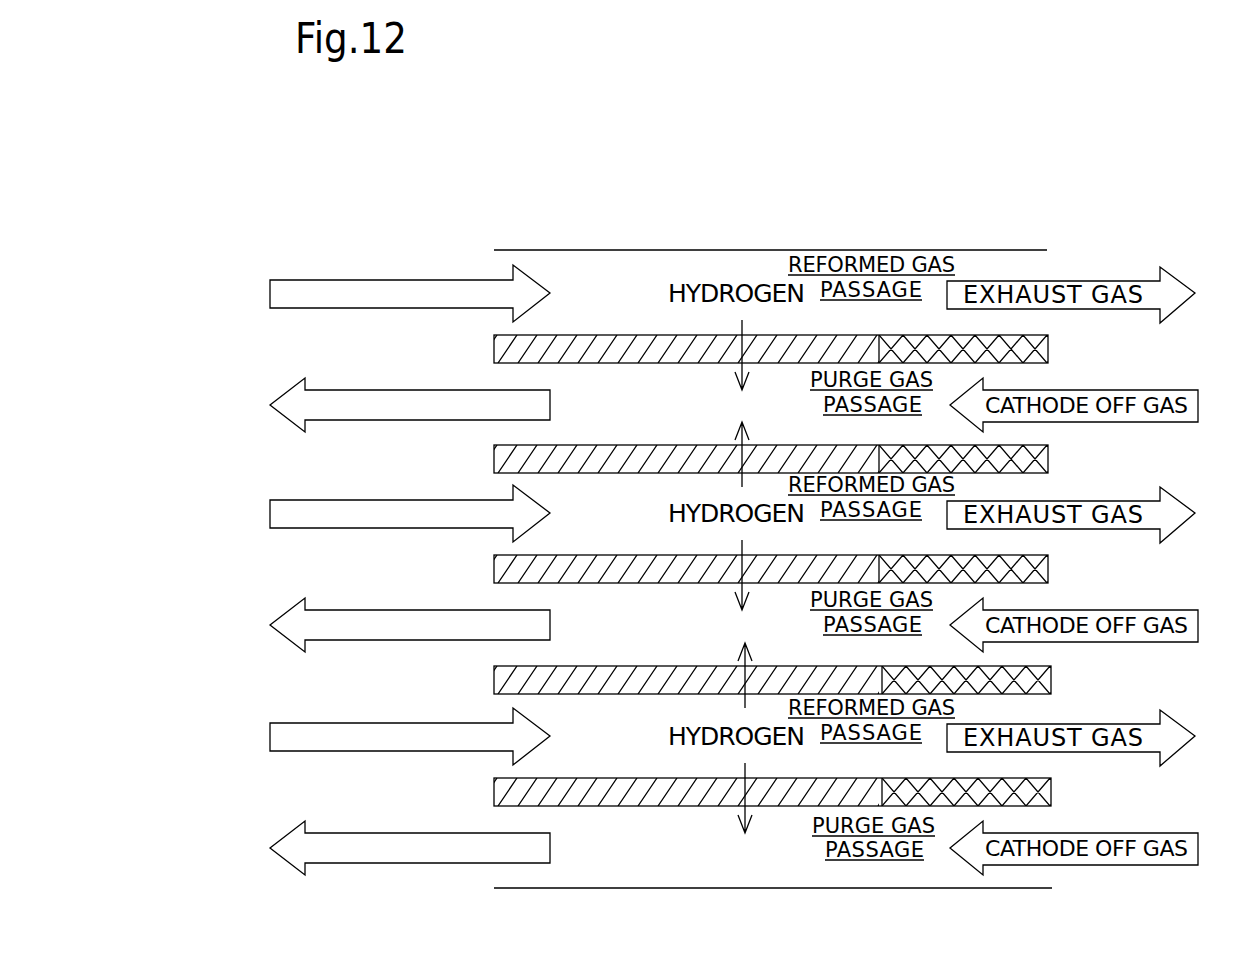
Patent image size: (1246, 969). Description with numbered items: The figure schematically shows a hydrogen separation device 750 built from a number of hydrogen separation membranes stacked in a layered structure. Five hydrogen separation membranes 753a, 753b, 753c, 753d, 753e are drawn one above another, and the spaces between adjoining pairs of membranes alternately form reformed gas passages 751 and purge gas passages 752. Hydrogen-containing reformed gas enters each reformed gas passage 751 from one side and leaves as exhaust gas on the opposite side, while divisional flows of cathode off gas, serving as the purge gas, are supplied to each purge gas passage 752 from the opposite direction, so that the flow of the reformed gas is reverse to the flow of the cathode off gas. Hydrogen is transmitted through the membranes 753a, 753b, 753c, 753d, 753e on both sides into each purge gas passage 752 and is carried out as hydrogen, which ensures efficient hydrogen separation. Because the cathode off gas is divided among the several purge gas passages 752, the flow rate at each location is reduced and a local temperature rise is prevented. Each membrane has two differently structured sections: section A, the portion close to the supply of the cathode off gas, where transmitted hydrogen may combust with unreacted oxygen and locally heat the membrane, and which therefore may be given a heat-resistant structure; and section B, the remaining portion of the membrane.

The hydrogen separation device 750 is at (1028, 156).
The reformed gas passage 751 is at (270, 287).
The purge gas passage 752 is at (278, 410).
The hydrogen separation membrane 753a is at (1048, 349).
The hydrogen separation membrane 753b is at (1048, 459).
The hydrogen separation membrane 753c is at (1048, 569).
The hydrogen separation membrane 753d is at (1051, 680).
The hydrogen separation membrane 753e is at (1051, 792).
The section A is at (893, 333).
The section B is at (797, 333).